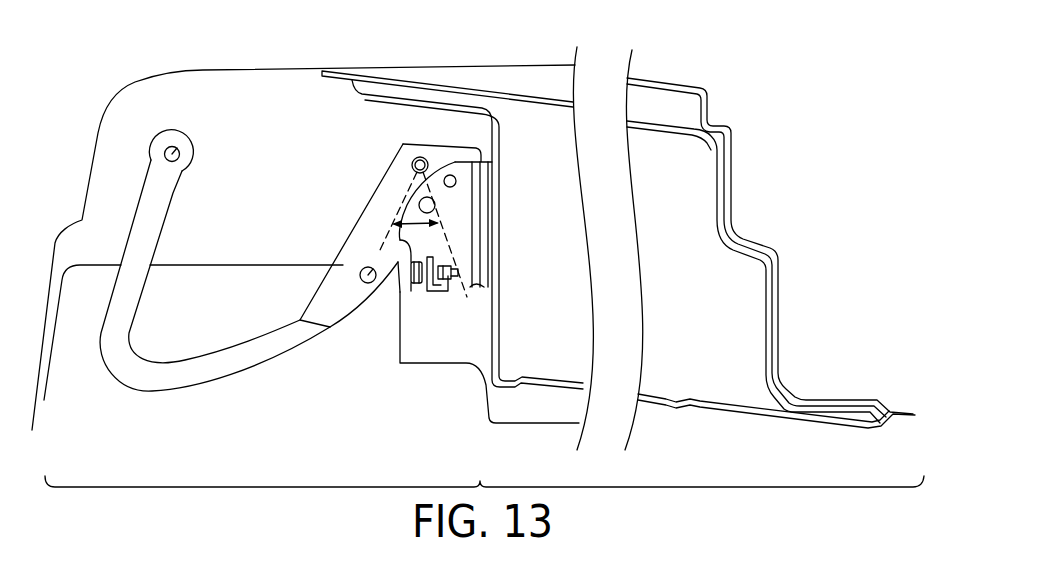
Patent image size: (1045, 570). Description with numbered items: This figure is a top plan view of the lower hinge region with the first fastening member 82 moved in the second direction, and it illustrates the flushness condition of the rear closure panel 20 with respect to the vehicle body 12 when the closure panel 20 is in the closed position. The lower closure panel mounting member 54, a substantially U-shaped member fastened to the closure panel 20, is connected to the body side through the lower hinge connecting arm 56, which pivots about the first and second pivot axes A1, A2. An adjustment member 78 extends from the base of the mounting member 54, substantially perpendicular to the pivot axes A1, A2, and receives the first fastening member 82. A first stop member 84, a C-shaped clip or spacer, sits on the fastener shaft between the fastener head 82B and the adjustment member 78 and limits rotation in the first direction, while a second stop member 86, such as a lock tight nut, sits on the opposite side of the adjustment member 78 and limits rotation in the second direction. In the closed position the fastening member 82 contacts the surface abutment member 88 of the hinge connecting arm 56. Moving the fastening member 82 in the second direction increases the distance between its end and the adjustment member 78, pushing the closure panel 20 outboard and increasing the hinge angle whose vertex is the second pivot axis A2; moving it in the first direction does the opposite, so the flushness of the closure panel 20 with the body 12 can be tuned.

The vehicle body 12 is at (255, 68).
The rear closure panel 20 is at (667, 80).
The lower closure panel mounting member 54 is at (484, 301).
The lower hinge connecting arm 56 is at (238, 395).
The adjustment member 78 is at (433, 300).
The first fastening member 82 is at (446, 294).
The fastener head 82B is at (400, 294).
The first stop member 84 is at (399, 295).
The second stop member 86 is at (450, 268).
The surface abutment member 88 is at (408, 240).
The first pivot axis A1 is at (177, 152).
The second pivot axis A2 is at (414, 162).